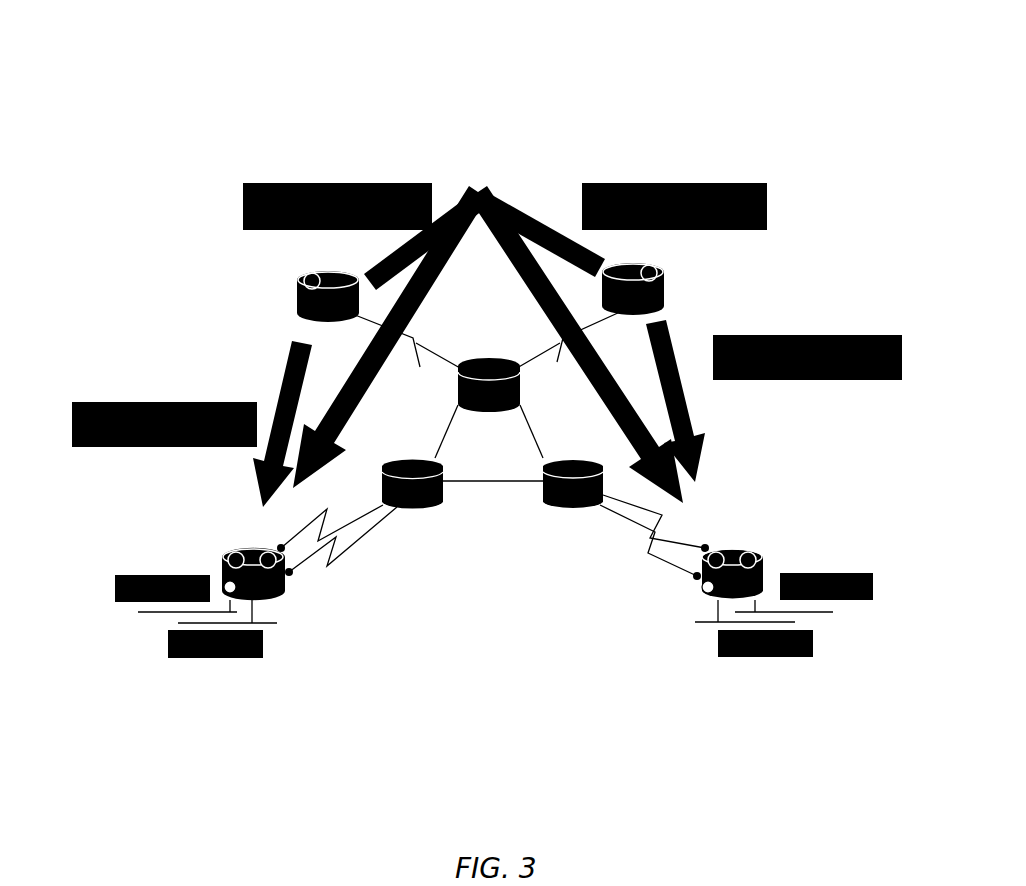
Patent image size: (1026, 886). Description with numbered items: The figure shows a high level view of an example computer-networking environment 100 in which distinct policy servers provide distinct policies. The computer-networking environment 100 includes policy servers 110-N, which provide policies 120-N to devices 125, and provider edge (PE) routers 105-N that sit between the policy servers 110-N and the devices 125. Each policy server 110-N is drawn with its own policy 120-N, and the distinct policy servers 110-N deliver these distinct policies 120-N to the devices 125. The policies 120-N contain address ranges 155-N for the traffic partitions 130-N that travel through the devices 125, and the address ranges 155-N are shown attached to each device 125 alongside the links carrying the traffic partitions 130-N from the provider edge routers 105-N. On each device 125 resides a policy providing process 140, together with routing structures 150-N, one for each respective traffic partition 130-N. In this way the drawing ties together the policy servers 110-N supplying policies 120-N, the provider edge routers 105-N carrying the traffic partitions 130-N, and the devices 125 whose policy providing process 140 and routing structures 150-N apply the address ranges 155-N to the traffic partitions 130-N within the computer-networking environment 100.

The computer-networking environment 100 is at (156, 76).
The provider edge (PE) routers 105-N is at (485, 357).
The policy servers 110-N is at (288, 299).
The policies 120-N is at (366, 166).
The device 125 is at (286, 600).
The traffic partitions 130-N is at (362, 524).
The policy providing process 140 is at (240, 597).
The routing structures 150-N is at (256, 548).
The address ranges 155-N is at (113, 590).